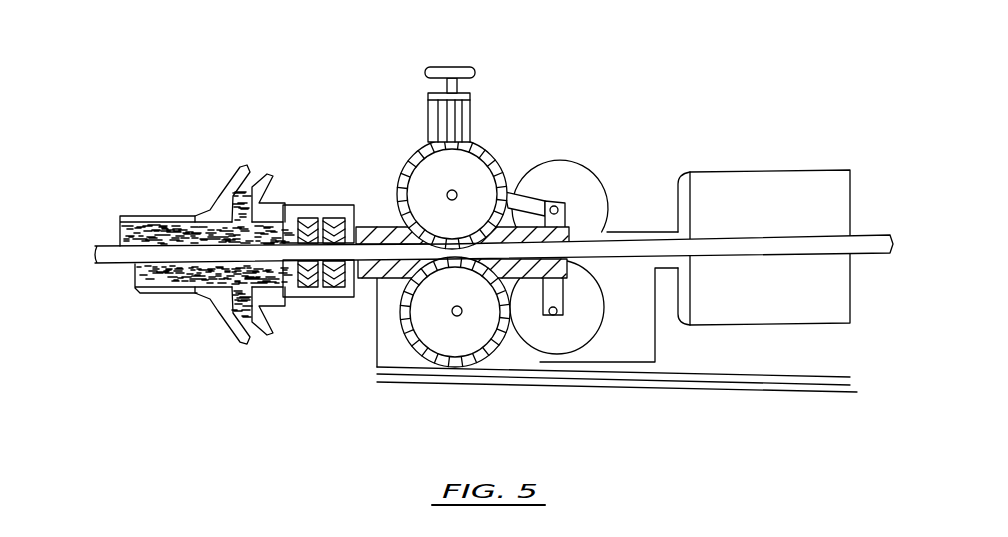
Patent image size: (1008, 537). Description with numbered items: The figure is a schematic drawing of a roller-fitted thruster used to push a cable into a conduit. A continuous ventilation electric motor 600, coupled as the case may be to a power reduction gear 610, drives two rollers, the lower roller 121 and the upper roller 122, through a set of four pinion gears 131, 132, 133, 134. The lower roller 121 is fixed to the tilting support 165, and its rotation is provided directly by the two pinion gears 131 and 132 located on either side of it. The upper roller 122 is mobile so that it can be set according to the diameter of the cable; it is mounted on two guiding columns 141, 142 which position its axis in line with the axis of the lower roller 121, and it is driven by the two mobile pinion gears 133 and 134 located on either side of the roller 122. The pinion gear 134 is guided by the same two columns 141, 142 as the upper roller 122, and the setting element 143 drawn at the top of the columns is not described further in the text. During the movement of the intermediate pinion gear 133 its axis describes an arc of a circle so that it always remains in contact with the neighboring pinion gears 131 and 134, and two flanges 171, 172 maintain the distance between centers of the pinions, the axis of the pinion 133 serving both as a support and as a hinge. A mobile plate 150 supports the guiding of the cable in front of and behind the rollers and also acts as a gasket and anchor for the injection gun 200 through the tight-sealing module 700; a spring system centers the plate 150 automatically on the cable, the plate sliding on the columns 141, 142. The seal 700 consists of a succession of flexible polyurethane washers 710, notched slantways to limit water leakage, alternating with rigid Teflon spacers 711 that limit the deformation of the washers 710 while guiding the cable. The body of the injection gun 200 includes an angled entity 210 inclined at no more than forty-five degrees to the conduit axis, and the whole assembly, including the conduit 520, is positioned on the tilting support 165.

The adjustment knob 143 is at (468, 65).
The guiding column 142 is at (427, 110).
The guiding column 141 is at (470, 112).
The upper roller 122 is at (412, 150).
The pinion gear 134 is at (480, 225).
The lower roller 121 is at (417, 343).
The pinion gear 132 is at (480, 338).
The flange 172 is at (523, 198).
The flange 171 is at (558, 292).
The intermediate pinion gear 133 is at (572, 168).
The pinion gear 131 is at (587, 330).
The continuous ventilation electric motor 600 is at (775, 177).
The power reduction gear 610 is at (677, 186).
The entity of the injection gun body 210 is at (253, 165).
The injection gun 200 is at (302, 388).
The tight-sealing module 700 is at (340, 198).
The flexible washer 710 is at (324, 218).
The rigid spacer 711 is at (312, 290).
The mobile plate 150 is at (368, 236).
The fluid conduit 520 is at (148, 214).
The tilting support 165 is at (695, 392).